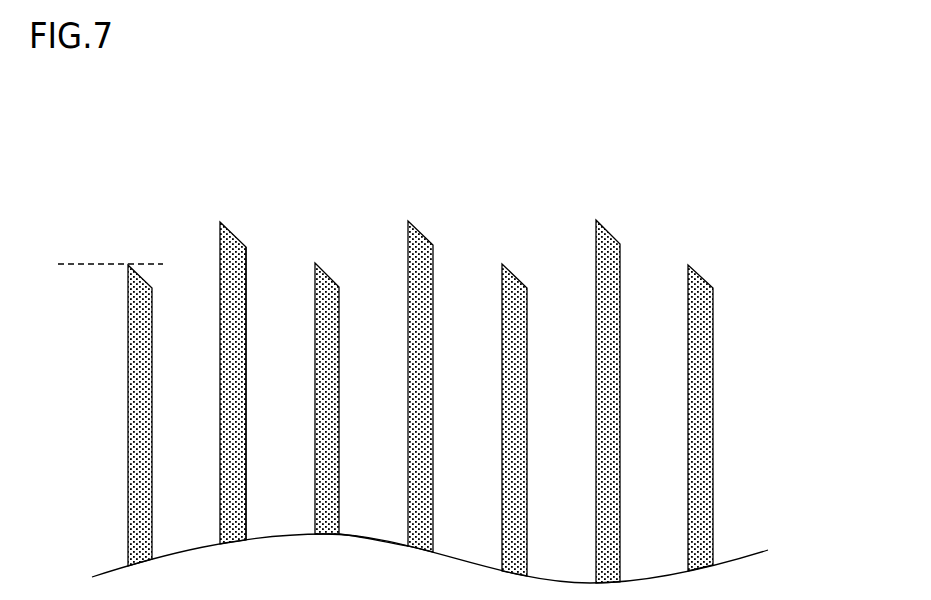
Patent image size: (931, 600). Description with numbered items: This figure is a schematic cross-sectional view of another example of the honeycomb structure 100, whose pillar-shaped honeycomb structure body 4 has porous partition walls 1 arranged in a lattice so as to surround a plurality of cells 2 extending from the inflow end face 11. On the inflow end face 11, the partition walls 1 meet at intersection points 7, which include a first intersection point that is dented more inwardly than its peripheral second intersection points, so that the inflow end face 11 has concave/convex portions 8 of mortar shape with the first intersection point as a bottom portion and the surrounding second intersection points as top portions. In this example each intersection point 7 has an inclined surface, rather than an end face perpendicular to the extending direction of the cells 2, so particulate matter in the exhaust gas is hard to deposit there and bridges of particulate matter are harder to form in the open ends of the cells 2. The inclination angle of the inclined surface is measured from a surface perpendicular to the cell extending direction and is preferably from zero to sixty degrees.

The honeycomb structure 100 is at (753, 103).
The partition wall 1 is at (422, 277).
The inflow end face 11 is at (137, 150).
The cell 2 is at (273, 338).
The honeycomb structure body 4 is at (623, 217).
The intersection point 7 is at (235, 237).
The concave/convex portion 8 is at (342, 240).